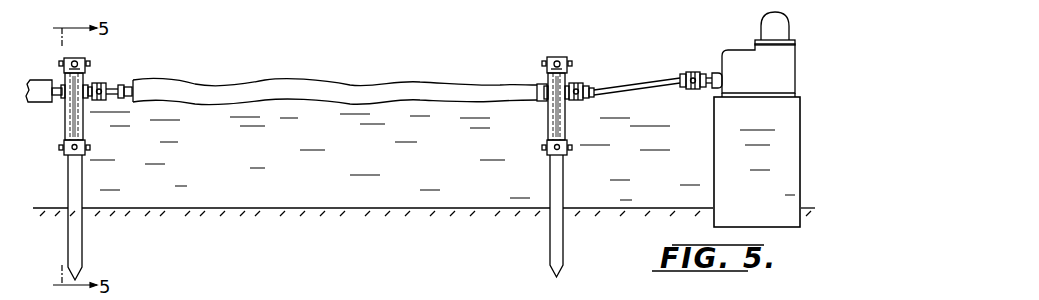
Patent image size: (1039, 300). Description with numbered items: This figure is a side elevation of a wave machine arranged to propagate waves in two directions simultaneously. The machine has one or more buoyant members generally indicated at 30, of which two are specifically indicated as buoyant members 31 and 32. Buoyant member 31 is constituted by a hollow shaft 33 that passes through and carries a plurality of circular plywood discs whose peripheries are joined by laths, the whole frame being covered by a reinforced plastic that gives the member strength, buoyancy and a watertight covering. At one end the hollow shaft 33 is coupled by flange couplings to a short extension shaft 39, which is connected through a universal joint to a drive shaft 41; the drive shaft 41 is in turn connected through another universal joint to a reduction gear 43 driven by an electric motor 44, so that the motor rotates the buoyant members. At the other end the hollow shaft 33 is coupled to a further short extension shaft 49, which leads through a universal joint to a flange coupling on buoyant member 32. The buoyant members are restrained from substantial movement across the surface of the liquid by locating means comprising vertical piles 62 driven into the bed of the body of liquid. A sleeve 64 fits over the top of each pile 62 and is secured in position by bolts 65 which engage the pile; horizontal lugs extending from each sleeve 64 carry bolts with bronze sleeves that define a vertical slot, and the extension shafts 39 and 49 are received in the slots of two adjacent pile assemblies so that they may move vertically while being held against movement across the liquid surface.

The buoyant members 30 is at (30, 79).
The buoyant member 31 is at (273, 80).
The buoyant member 32 is at (54, 99).
The hollow shaft 33 is at (134, 84).
The short extension shaft 39 is at (542, 89).
The drive shaft 41 is at (657, 82).
The reduction gear 43 is at (748, 60).
The electric motor 44 is at (770, 22).
The short extension shaft 49 is at (86, 88).
The vertical pile 62 is at (83, 167).
The sleeve 64 is at (65, 126).
The bolts 65 is at (60, 151).